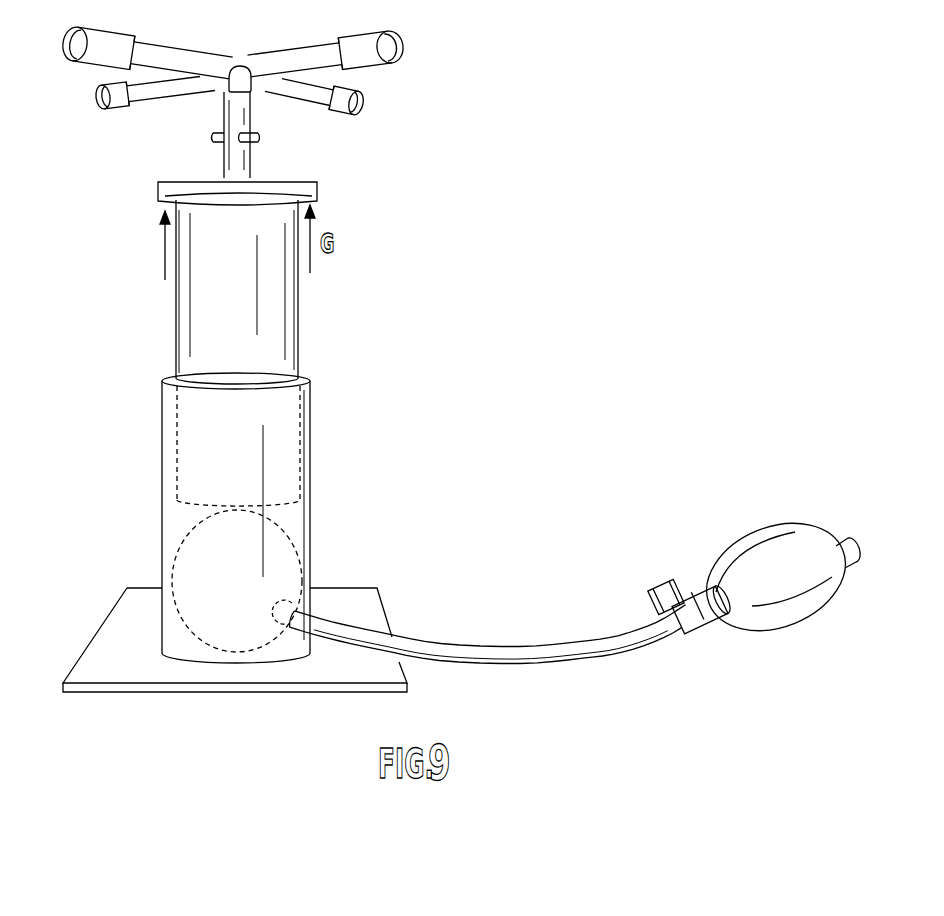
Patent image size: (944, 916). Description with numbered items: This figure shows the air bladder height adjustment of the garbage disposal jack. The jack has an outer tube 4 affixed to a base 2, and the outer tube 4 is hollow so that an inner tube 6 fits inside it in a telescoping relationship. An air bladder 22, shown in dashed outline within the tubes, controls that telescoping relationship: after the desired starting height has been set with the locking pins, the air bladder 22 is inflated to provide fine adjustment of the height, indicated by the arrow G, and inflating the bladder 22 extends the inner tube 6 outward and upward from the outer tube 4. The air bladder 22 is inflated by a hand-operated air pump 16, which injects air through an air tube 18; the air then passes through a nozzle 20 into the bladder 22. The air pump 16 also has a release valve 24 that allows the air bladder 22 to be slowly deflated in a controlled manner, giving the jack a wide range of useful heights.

The base 2 is at (372, 608).
The outer tube 4 is at (310, 497).
The inner tube 6 is at (297, 338).
The air pump 16 is at (767, 522).
The air tube 18 is at (521, 650).
The nozzle 20 is at (313, 577).
The air bladder 22 is at (180, 533).
The release valve 24 is at (657, 583).